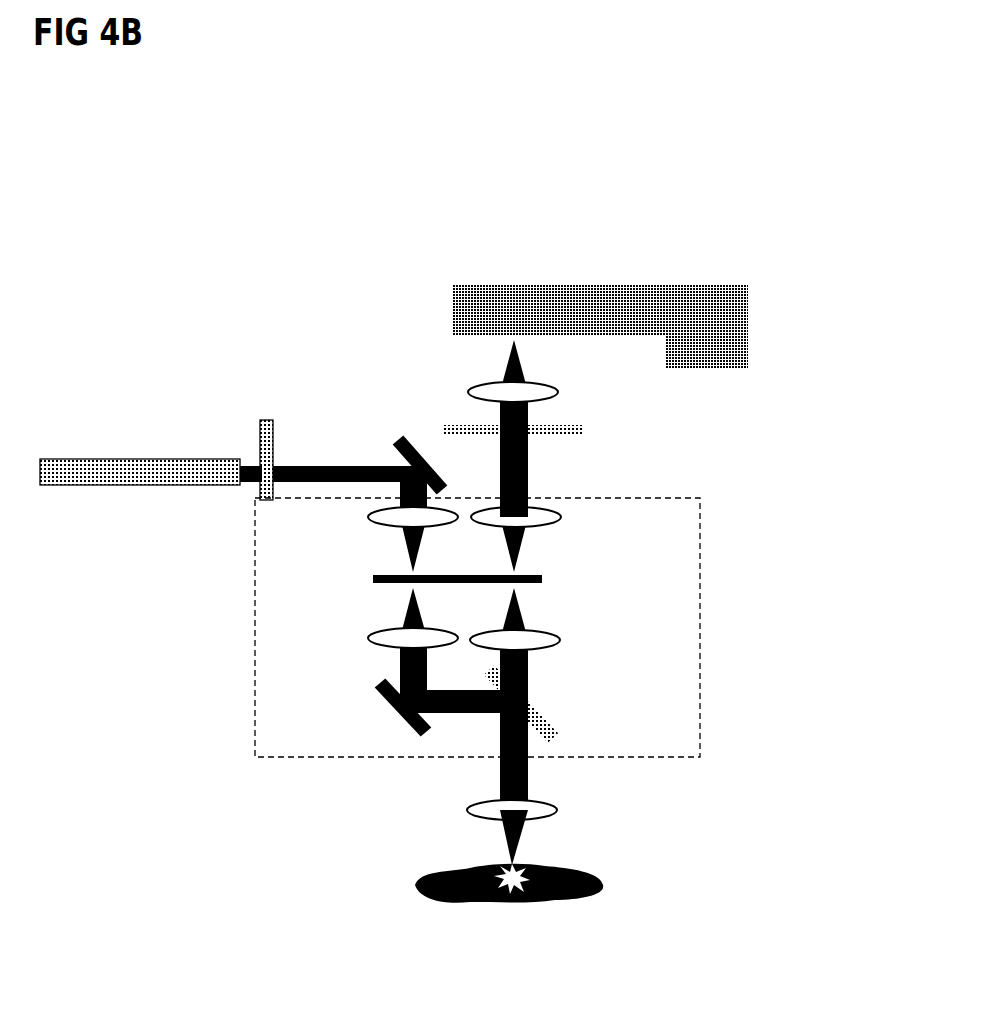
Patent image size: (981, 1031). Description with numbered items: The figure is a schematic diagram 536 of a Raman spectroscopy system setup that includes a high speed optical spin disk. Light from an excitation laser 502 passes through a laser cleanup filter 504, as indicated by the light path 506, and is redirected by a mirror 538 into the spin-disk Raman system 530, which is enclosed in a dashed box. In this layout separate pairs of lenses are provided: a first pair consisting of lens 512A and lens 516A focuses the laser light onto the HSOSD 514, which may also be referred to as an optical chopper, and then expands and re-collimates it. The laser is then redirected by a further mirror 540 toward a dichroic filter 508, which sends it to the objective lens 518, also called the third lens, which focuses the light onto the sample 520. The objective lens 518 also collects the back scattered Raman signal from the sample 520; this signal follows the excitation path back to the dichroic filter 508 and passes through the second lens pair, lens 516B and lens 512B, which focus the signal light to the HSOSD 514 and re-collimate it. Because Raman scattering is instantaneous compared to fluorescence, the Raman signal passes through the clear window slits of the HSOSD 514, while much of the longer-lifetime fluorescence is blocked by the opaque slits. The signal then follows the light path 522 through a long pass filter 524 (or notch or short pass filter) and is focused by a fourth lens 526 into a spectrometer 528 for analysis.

The excitation laser 502 is at (75, 461).
The laser cleanup filter 504 is at (265, 437).
The light path 506 is at (375, 465).
The mirror 538 is at (395, 437).
The spin-disk Raman system 530 is at (255, 668).
The first lens of first pair 512A is at (403, 512).
The HSOSD 514 is at (540, 578).
The second lens of first pair 516A is at (375, 643).
The mirror 540 is at (405, 728).
The dichroic filter 508 is at (530, 697).
The first lens of second pair 516B is at (545, 637).
The second lens of second pair 512B is at (525, 517).
The light path 522 is at (528, 465).
The long pass filter 524 is at (450, 428).
The fourth lens 526 is at (530, 395).
The spectrometer 528 is at (708, 295).
The objective lens 518 is at (515, 812).
The sample 520 is at (465, 890).
The schematic diagram 536 is at (773, 103).